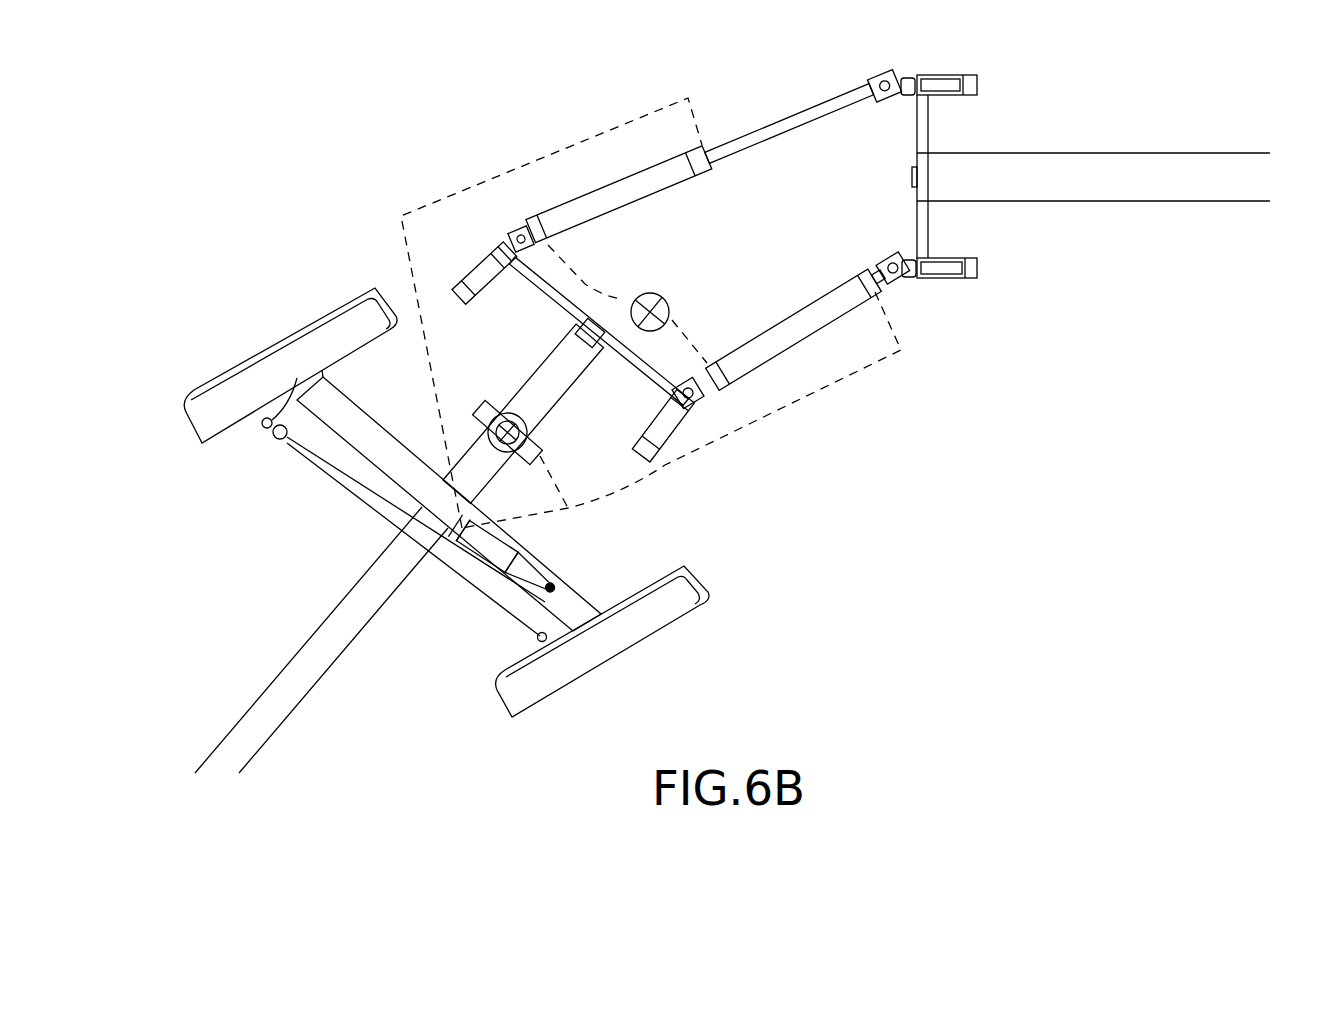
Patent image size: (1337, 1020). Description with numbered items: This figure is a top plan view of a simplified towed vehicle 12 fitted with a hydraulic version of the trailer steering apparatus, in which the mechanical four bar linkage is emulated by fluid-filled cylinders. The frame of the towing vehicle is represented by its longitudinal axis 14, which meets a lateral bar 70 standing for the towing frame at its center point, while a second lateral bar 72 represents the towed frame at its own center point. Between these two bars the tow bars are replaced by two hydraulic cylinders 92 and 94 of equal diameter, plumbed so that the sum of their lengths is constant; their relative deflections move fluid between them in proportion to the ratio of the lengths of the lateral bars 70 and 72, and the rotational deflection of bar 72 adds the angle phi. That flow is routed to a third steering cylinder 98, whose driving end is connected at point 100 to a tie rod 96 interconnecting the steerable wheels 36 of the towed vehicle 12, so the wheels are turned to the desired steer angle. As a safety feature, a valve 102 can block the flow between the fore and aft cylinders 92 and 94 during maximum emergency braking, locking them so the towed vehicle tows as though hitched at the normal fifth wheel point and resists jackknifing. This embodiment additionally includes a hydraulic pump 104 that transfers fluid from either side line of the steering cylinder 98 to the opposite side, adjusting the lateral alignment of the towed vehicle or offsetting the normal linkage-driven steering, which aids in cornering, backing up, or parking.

The towed vehicle 12 is at (305, 677).
The longitudinal axis 14 is at (1167, 162).
The steerable wheels 36 is at (316, 322).
The lateral bar 70 is at (929, 228).
The lateral bar 72 is at (640, 385).
The hydraulic cylinder 92 is at (606, 186).
The hydraulic cylinder 94 is at (829, 340).
The tie rod 96 is at (381, 512).
The steering cylinder 98 is at (552, 568).
The point 100 is at (278, 436).
The valve 102 is at (658, 293).
The hydraulic pump 104 is at (480, 402).